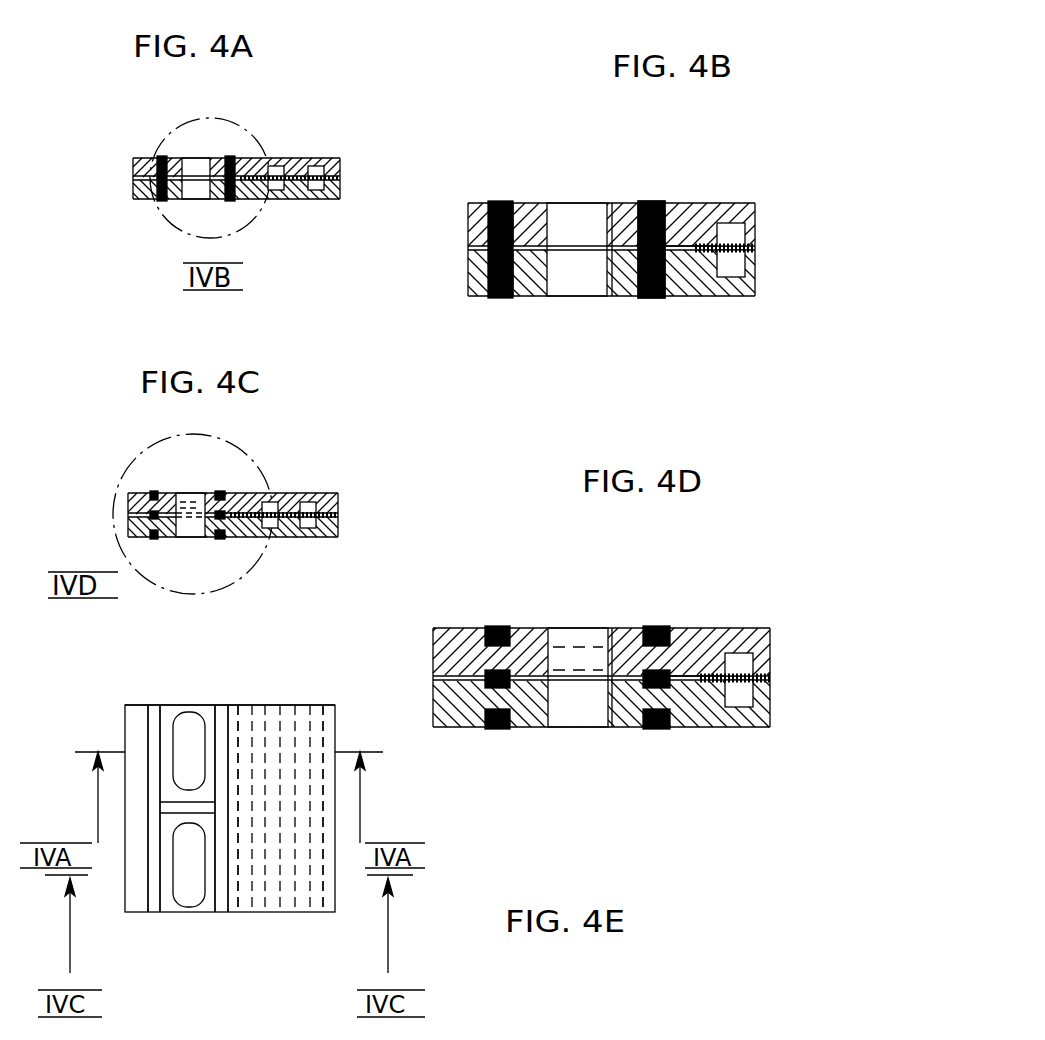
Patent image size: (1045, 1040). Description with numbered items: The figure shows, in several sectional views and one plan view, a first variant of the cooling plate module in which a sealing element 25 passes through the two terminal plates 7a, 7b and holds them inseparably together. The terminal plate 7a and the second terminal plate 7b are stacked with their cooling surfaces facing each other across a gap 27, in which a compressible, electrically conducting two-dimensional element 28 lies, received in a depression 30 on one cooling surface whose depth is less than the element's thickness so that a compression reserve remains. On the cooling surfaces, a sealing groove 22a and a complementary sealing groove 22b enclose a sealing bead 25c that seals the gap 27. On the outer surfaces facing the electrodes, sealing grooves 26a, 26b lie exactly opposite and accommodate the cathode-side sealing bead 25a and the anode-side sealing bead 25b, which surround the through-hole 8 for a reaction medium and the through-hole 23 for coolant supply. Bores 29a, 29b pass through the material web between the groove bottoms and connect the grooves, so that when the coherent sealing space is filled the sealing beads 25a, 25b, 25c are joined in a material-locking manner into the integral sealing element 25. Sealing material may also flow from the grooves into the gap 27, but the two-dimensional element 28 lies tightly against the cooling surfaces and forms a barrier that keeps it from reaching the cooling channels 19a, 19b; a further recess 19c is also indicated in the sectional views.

In FIG. 4A, the terminal plate 7a is at (340, 163).
In FIG. 4B, the terminal plate 7a is at (742, 212).
In FIG. 4C, the terminal plate 7a is at (338, 500).
In FIG. 4D, the terminal plate 7a is at (768, 636).
In FIG. 4E, the terminal plate 7a is at (332, 730).
In FIG. 4A, the second terminal plate 7b is at (340, 193).
In FIG. 4B, the second terminal plate 7b is at (745, 283).
In FIG. 4C, the second terminal plate 7b is at (338, 532).
In FIG. 4D, the second terminal plate 7b is at (760, 720).
In FIG. 4A, the through-hole 8 is at (188, 172).
In FIG. 4B, the through-hole 8 is at (560, 222).
In FIG. 4E, the through-hole 8 is at (188, 728).
In FIG. 4B, the cooling channel 19a is at (735, 235).
In FIG. 4E, the cooling channel 19a is at (318, 720).
In FIG. 4B, the cooling channel 19b is at (735, 265).
In FIG. 4D, the cooling channel 19b is at (745, 700).
In FIG. 4D, the recess 19c is at (745, 660).
In FIG. 4D, the sealing groove 22a is at (490, 672).
In FIG. 4D, the complementary sealing groove 22b is at (480, 695).
In FIG. 4C, the through-hole 23 is at (190, 495).
In FIG. 4D, the through-hole 23 is at (578, 705).
In FIG. 4E, the through-hole 23 is at (187, 885).
In FIG. 4A, the sealing element 25 is at (232, 165).
In FIG. 4B, the sealing element 25 is at (490, 208).
In FIG. 4B, the sealing bead 25a is at (654, 206).
In FIG. 4C, the sealing bead 25a is at (224, 496).
In FIG. 4D, the sealing bead 25a is at (652, 632).
In FIG. 4E, the sealing bead 25a is at (222, 727).
In FIG. 4B, the sealing bead 25b is at (648, 296).
In FIG. 4C, the sealing bead 25b is at (222, 538).
In FIG. 4D, the sealing bead 25b is at (650, 730).
In FIG. 4B, the sealing bead 25c is at (668, 243).
In FIG. 4C, the sealing bead 25c is at (225, 515).
In FIG. 4D, the sealing bead 25c is at (666, 676).
In FIG. 4D, the sealing groove 26a is at (500, 635).
In FIG. 4E, the sealing groove 26a is at (230, 720).
In FIG. 4D, the sealing groove 26b is at (500, 729).
In FIG. 4B, the gap 27 is at (617, 242).
In FIG. 4D, the gap 27 is at (614, 665).
In FIG. 4A, the two-dimensional element 28 is at (340, 178).
In FIG. 4B, the two-dimensional element 28 is at (755, 248).
In FIG. 4C, the two-dimensional element 28 is at (338, 515).
In FIG. 4D, the two-dimensional element 28 is at (770, 678).
In FIG. 4B, the bore 29a is at (526, 210).
In FIG. 4E, the bore 29a is at (155, 712).
In FIG. 4B, the bore 29b is at (522, 294).
In FIG. 4B, the depression 30 is at (688, 262).
In FIG. 4D, the depression 30 is at (688, 700).